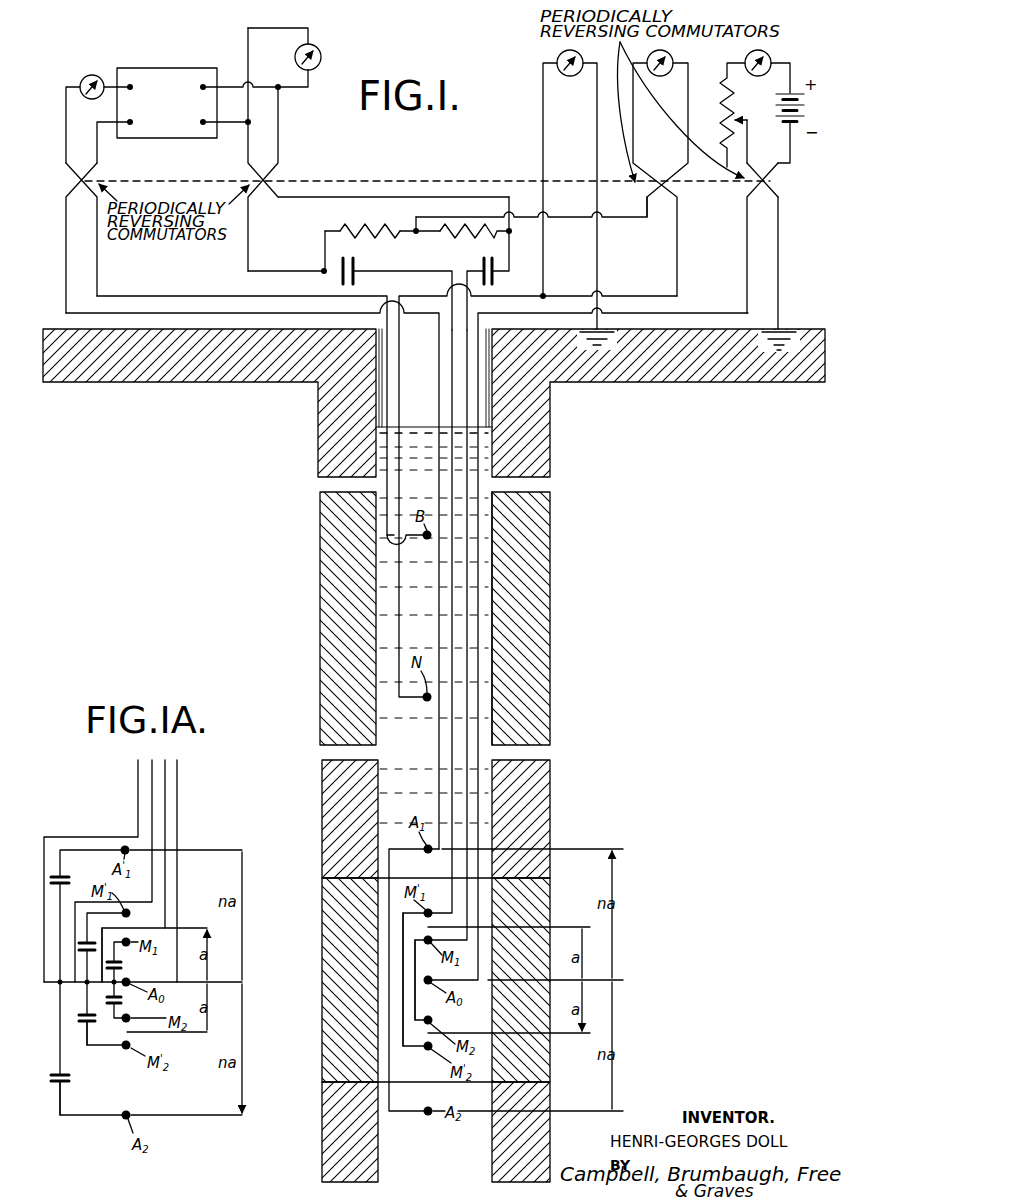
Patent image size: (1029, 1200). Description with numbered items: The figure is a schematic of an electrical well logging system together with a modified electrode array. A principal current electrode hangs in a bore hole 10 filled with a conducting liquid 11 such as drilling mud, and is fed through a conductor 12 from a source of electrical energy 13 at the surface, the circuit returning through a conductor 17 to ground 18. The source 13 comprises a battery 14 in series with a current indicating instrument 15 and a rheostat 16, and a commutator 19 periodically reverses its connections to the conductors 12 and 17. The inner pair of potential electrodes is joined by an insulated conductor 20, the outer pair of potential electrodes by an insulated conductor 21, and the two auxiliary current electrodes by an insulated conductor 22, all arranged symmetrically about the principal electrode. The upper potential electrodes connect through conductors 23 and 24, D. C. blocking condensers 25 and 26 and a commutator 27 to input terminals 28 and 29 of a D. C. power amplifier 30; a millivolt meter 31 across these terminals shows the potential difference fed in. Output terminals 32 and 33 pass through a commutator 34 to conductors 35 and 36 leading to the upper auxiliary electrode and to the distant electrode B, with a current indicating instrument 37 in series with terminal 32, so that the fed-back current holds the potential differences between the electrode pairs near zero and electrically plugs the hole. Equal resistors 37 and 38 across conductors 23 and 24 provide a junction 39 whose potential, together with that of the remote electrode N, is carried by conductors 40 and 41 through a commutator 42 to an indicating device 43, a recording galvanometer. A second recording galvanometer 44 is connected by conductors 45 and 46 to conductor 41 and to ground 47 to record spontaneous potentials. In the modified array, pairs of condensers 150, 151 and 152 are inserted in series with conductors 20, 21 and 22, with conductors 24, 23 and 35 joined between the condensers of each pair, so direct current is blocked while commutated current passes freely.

In FIG. 1, the bore hole 10 is at (494, 585).
In FIG. 1, the conducting liquid 11 is at (417, 432).
In FIG. 1, the conductor 12 is at (480, 713).
In FIG. 1A, the conductor 12 is at (177, 782).
In FIG. 1, the source of electrical energy 13 is at (774, 113).
In FIG. 1, the battery 14 is at (800, 108).
In FIG. 1, the current indicating instrument 15 is at (772, 56).
In FIG. 1, the rheostat 16 is at (724, 110).
In FIG. 1, the conductor 17 is at (781, 252).
In FIG. 1, the ground 18 is at (784, 329).
In FIG. 1, the commutator 19 is at (780, 190).
In FIG. 1, the insulated conductor 20 is at (418, 1003).
In FIG. 1A, the insulated conductor 20 is at (112, 1020).
In FIG. 1, the insulated conductor 21 is at (403, 1013).
In FIG. 1A, the insulated conductor 21 is at (115, 1048).
In FIG. 1, the insulated conductor 22 is at (392, 1068).
In FIG. 1A, the insulated conductor 22 is at (83, 1117).
In FIG. 1, the conductor 23 is at (452, 621).
In FIG. 1A, the conductor 23 is at (152, 797).
In FIG. 1, the conductor 24 is at (468, 664).
In FIG. 1A, the conductor 24 is at (167, 820).
In FIG. 1, the D. C. blocking condenser 25 is at (343, 265).
In FIG. 1, the D. C. blocking condenser 26 is at (496, 276).
In FIG. 1, the commutator 27 is at (272, 172).
In FIG. 1, the input terminal 28 is at (203, 125).
In FIG. 1, the input terminal 29 is at (203, 84).
In FIG. 1, the D. C. power amplifier 30 is at (170, 68).
In FIG. 1, the millivolt meter 31 is at (294, 54).
In FIG. 1, the output terminal 32 is at (130, 84).
In FIG. 1, the output terminal 33 is at (130, 125).
In FIG. 1, the commutator 34 is at (66, 177).
In FIG. 1, the conductor 35 is at (153, 313).
In FIG. 1A, the conductor 35 is at (138, 770).
In FIG. 1, the conductor 36 is at (205, 296).
In FIG. 1, the current indicating instrument 37 is at (86, 76).
In FIG. 1, the resistor 38 is at (453, 234).
In FIG. 1, the junction 39 is at (416, 234).
In FIG. 1, the conductor 40 is at (567, 217).
In FIG. 1, the conductor 41 is at (567, 295).
In FIG. 1, the commutator 42 is at (652, 168).
In FIG. 1, the indicating device 43 is at (668, 59).
In FIG. 1, the recording galvanometer 44 is at (554, 71).
In FIG. 1, the conductor 45 is at (543, 132).
In FIG. 1, the conductor 46 is at (597, 123).
In FIG. 1, the ground 47 is at (606, 330).
In FIG. 1A, the condensers 150 is at (122, 963).
In FIG. 1A, the condensers 151 is at (82, 940).
In FIG. 1A, the condensers 152 is at (81, 874).